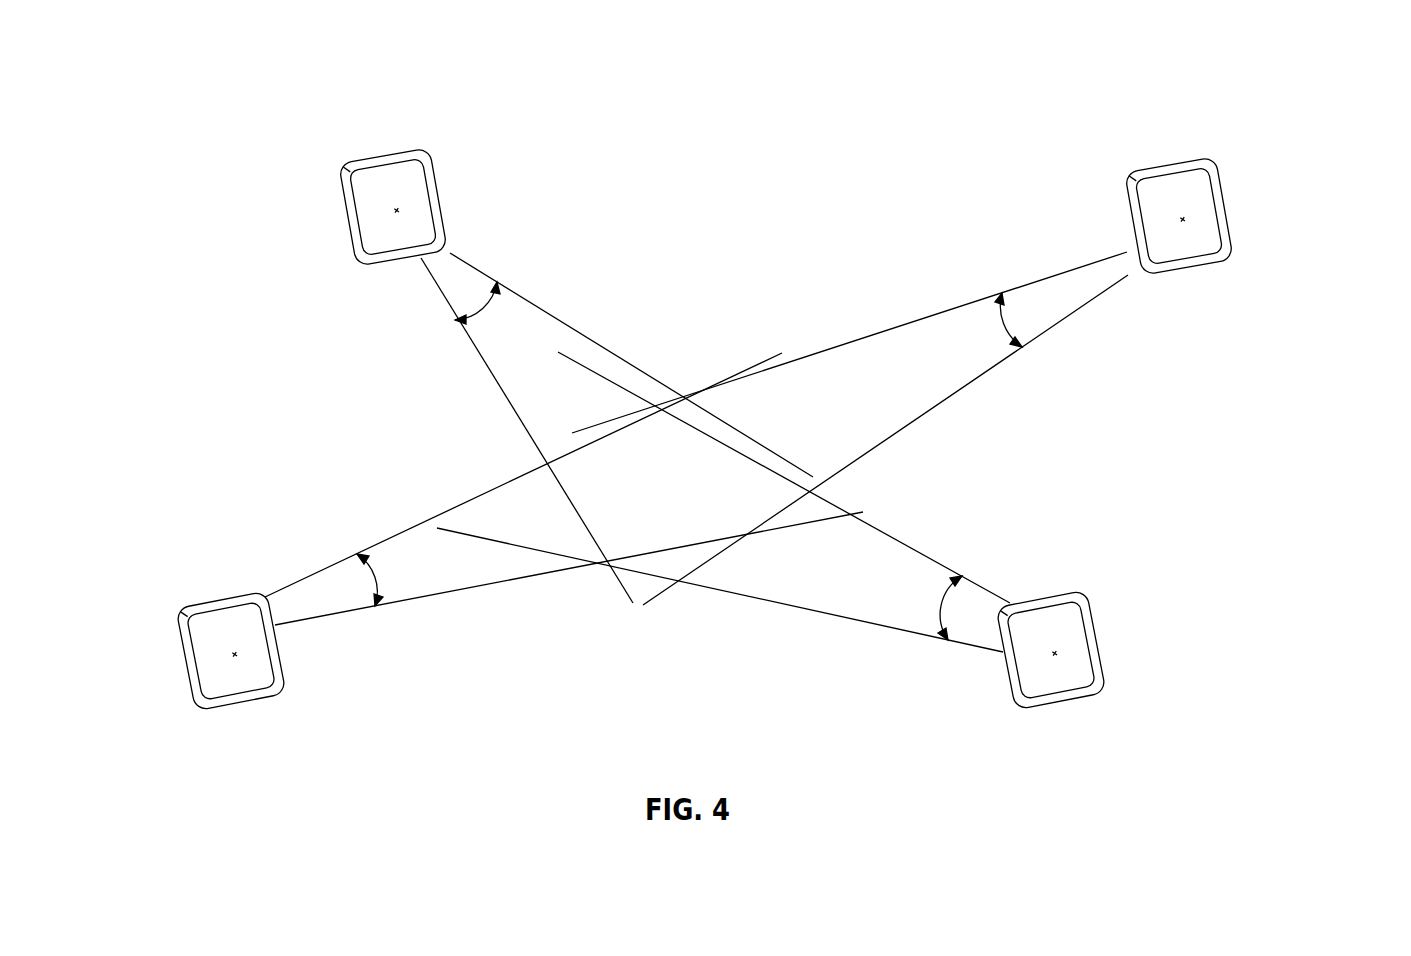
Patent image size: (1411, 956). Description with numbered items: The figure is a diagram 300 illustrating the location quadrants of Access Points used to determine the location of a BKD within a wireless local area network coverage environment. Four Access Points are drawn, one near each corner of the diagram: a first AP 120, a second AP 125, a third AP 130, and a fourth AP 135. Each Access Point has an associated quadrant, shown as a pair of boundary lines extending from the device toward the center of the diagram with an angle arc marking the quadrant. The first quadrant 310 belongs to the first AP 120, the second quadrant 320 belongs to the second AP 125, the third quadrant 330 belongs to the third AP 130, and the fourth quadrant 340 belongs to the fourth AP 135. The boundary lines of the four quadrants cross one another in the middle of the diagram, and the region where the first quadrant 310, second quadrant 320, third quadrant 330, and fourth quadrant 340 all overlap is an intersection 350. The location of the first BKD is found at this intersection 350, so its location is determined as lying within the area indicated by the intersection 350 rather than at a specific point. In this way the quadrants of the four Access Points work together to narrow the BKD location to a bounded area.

The diagram 300 is at (1306, 86).
The first AP 120 is at (323, 183).
The second AP 125 is at (1232, 218).
The third AP 130 is at (1105, 651).
The fourth AP 135 is at (170, 658).
The first quadrant 310 is at (505, 305).
The second quadrant 320 is at (978, 322).
The third quadrant 330 is at (926, 626).
The fourth quadrant 340 is at (398, 580).
The intersection 350 is at (603, 503).